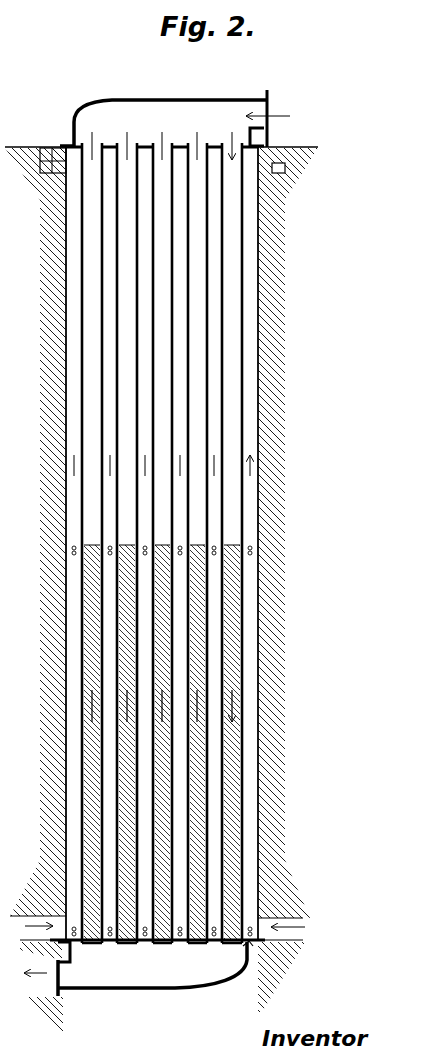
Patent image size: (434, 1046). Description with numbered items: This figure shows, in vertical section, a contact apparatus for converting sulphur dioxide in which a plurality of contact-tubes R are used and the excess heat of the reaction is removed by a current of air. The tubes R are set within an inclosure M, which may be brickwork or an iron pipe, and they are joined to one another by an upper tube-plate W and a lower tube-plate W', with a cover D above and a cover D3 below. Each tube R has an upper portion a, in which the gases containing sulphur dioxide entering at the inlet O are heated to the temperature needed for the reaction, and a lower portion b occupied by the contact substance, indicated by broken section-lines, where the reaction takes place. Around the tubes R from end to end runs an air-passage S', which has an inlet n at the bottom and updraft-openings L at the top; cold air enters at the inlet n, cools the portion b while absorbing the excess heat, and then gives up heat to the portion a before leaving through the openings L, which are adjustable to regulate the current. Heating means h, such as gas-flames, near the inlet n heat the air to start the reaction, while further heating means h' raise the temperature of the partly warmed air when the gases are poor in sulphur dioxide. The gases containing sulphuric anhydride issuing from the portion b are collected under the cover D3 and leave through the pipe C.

The updraft-openings L is at (300, 180).
The cover D is at (162, 141).
The gas inlet O is at (268, 104).
The tube-plate W is at (270, 137).
The air-passage S' is at (293, 543).
The heating portion of the contact-tube a is at (162, 543).
The contact-tubes R is at (162, 412).
The inclosure M is at (161, 589).
The heating means h' is at (163, 539).
The contact-substance portion of the contact-tube b is at (162, 743).
The heating means h is at (160, 921).
The air inlet n is at (159, 928).
The cover D3 is at (152, 969).
The outlet pipe C is at (52, 965).
The tube-plate W' is at (274, 960).